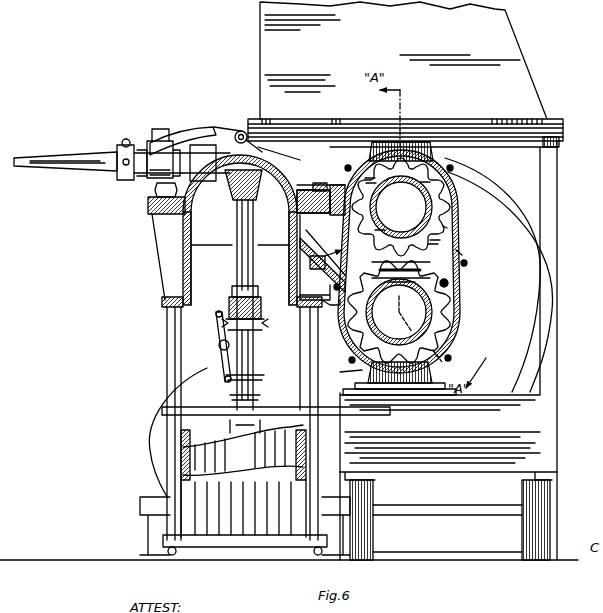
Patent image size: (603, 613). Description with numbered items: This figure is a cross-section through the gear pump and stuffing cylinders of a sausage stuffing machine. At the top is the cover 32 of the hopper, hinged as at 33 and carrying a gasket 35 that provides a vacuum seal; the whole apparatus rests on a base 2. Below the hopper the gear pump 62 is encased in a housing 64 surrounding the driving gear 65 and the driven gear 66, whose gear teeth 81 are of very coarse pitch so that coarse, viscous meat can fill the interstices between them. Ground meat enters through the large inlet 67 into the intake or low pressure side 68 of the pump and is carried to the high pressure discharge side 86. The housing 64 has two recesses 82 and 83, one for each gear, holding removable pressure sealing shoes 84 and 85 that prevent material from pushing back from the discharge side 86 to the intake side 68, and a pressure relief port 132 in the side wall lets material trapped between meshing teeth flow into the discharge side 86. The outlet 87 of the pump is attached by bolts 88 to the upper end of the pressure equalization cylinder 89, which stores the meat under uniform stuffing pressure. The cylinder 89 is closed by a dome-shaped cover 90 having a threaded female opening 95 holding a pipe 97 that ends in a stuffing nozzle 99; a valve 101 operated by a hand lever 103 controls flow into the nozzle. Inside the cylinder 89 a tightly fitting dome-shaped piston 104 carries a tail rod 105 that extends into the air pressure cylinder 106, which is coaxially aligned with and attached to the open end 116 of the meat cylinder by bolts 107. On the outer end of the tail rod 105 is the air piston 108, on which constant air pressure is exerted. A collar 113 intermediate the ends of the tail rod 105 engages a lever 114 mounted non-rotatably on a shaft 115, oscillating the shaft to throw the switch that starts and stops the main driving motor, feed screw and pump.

The base 2 is at (545, 521).
The cover 32 is at (490, 58).
The hinge 33 is at (246, 133).
The gasket 35 is at (565, 129).
The gear pump 62 is at (457, 343).
The housing 64 is at (447, 206).
The driving gear 65 is at (453, 310).
The driven gear 66 is at (442, 222).
The inlet 67 is at (445, 250).
The intake or low pressure side 68 is at (446, 274).
The gear teeth 81 is at (449, 284).
The recess 82 is at (362, 377).
The recess 83 is at (432, 151).
The pressure sealing shoe 84 is at (406, 383).
The pressure sealing shoe 85 is at (400, 145).
The discharge side 86 is at (322, 230).
The outlet 87 is at (350, 167).
The bolts 88 is at (328, 188).
The pressure equalization cylinder 89 is at (181, 234).
The dome-shaped cover 90 is at (226, 152).
The threaded female opening 95 is at (200, 150).
The pipe 97 is at (126, 144).
The stuffing nozzle 99 is at (60, 143).
The valve 101 is at (152, 170).
The hand lever 103 is at (158, 129).
The dome-shaped piston 104 is at (207, 186).
The tail rod 105 is at (236, 264).
The air pressure cylinder 106 is at (197, 518).
The bolts 107 is at (175, 379).
The piston 108 is at (264, 447).
The collar 113 is at (236, 298).
The lever 114 is at (214, 326).
The shaft 115 is at (219, 346).
The open end 116 is at (197, 307).
The pressure relief port 132 is at (310, 262).